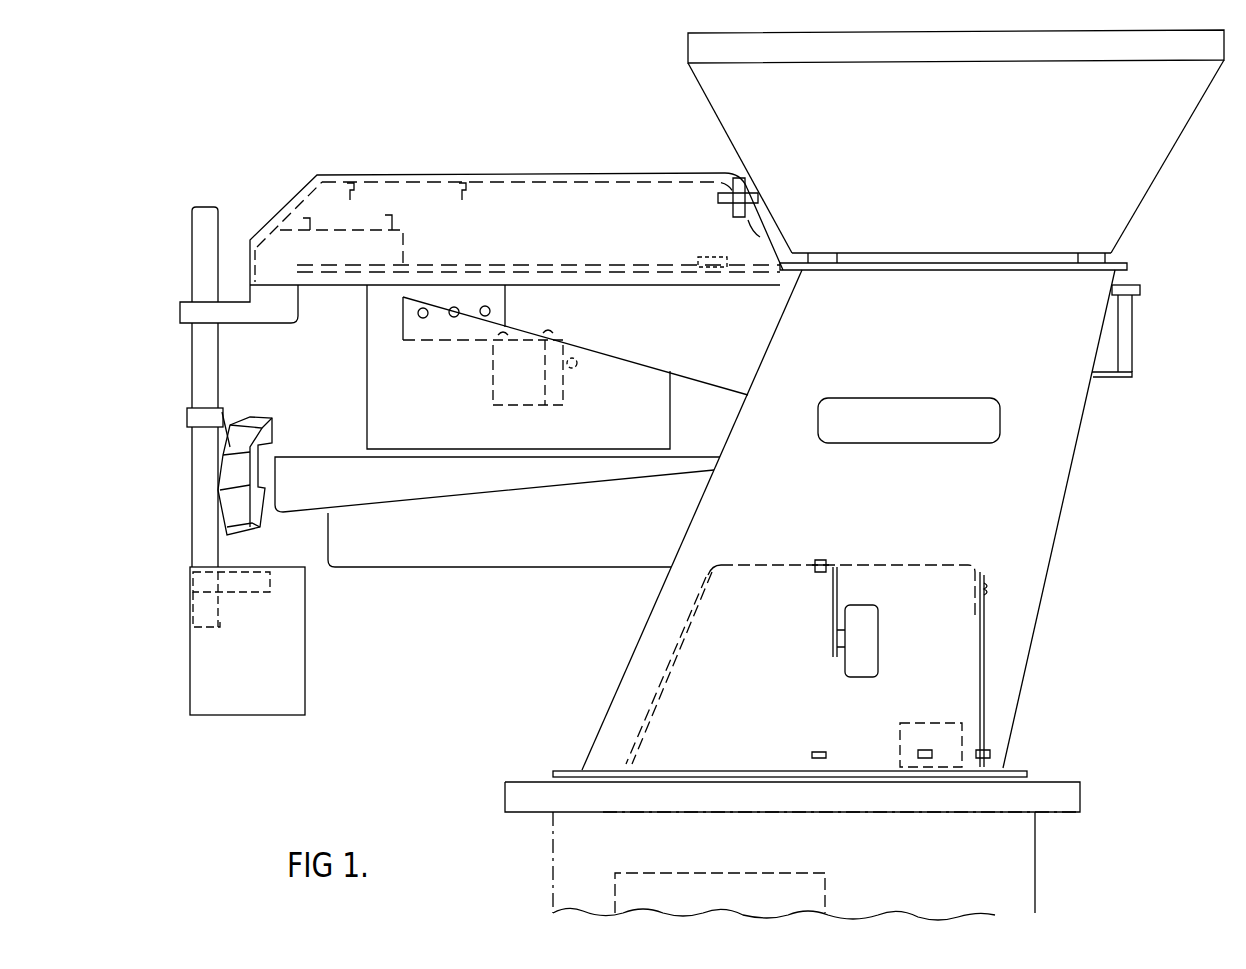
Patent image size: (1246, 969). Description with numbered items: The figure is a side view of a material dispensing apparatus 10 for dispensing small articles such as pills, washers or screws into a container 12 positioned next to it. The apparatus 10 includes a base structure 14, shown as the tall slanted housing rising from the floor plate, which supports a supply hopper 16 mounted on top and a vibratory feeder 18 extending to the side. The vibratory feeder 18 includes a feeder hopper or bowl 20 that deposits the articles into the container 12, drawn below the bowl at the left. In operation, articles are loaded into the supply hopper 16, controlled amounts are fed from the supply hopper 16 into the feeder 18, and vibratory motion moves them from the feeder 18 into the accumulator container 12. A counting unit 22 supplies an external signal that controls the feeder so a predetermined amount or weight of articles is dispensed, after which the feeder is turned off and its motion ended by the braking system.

The material dispensing apparatus 10 is at (1082, 542).
The container 12 is at (306, 652).
The base structure 14 is at (790, 522).
The supply hopper 16 is at (963, 182).
The vibratory feeder 18 is at (457, 588).
The feeder bowl 20 is at (395, 499).
The counting unit 22 is at (272, 423).